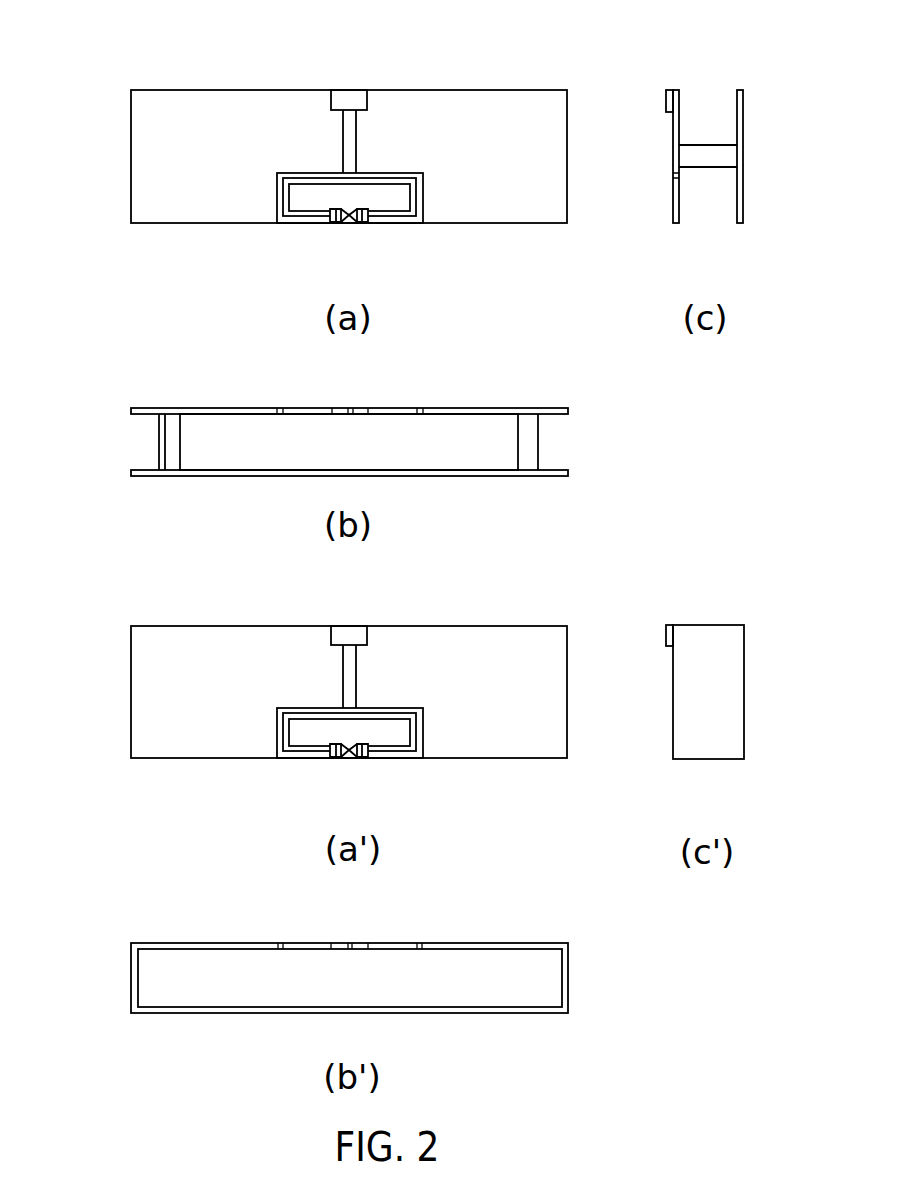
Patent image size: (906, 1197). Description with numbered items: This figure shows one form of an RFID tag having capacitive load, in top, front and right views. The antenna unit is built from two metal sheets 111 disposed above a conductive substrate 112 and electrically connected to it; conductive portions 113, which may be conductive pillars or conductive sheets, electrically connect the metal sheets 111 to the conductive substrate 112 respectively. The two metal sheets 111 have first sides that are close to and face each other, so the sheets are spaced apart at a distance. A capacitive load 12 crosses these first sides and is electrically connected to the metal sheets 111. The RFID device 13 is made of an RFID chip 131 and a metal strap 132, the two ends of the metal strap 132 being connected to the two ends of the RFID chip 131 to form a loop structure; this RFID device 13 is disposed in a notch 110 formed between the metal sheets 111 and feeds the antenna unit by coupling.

The notch 110 is at (277, 202).
The metal sheet 111 is at (218, 105).
The conductive substrate 112 is at (740, 95).
The conductive portion 113 is at (695, 152).
The capacitive load 12 is at (346, 98).
The RFID device 13 is at (331, 576).
The RFID chip 131 is at (337, 214).
The metal strap 132 is at (325, 268).